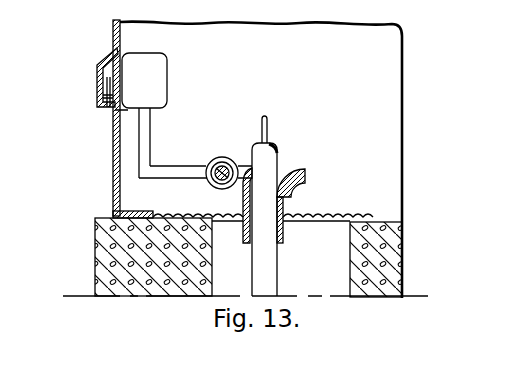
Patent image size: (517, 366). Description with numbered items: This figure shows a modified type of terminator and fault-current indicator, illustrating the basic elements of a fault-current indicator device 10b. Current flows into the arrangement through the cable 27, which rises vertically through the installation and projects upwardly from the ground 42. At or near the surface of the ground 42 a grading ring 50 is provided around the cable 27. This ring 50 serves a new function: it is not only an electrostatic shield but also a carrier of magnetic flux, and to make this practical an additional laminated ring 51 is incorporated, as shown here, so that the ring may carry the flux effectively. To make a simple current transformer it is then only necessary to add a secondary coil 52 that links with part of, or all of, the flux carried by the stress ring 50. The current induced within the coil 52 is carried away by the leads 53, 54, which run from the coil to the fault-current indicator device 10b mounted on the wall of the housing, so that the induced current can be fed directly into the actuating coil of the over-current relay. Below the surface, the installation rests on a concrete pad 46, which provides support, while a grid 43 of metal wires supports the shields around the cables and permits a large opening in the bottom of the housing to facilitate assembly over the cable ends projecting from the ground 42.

The fault-current indicator device 10b is at (208, 80).
The cable 27 is at (261, 128).
The ground 42 is at (82, 293).
The grid 43 is at (313, 221).
The concrete pad 46 is at (403, 240).
The grading ring 50 is at (285, 188).
The laminated ring 51 is at (208, 181).
The secondary coil 52 is at (213, 162).
The lead 53 is at (151, 128).
The lead 54 is at (170, 178).